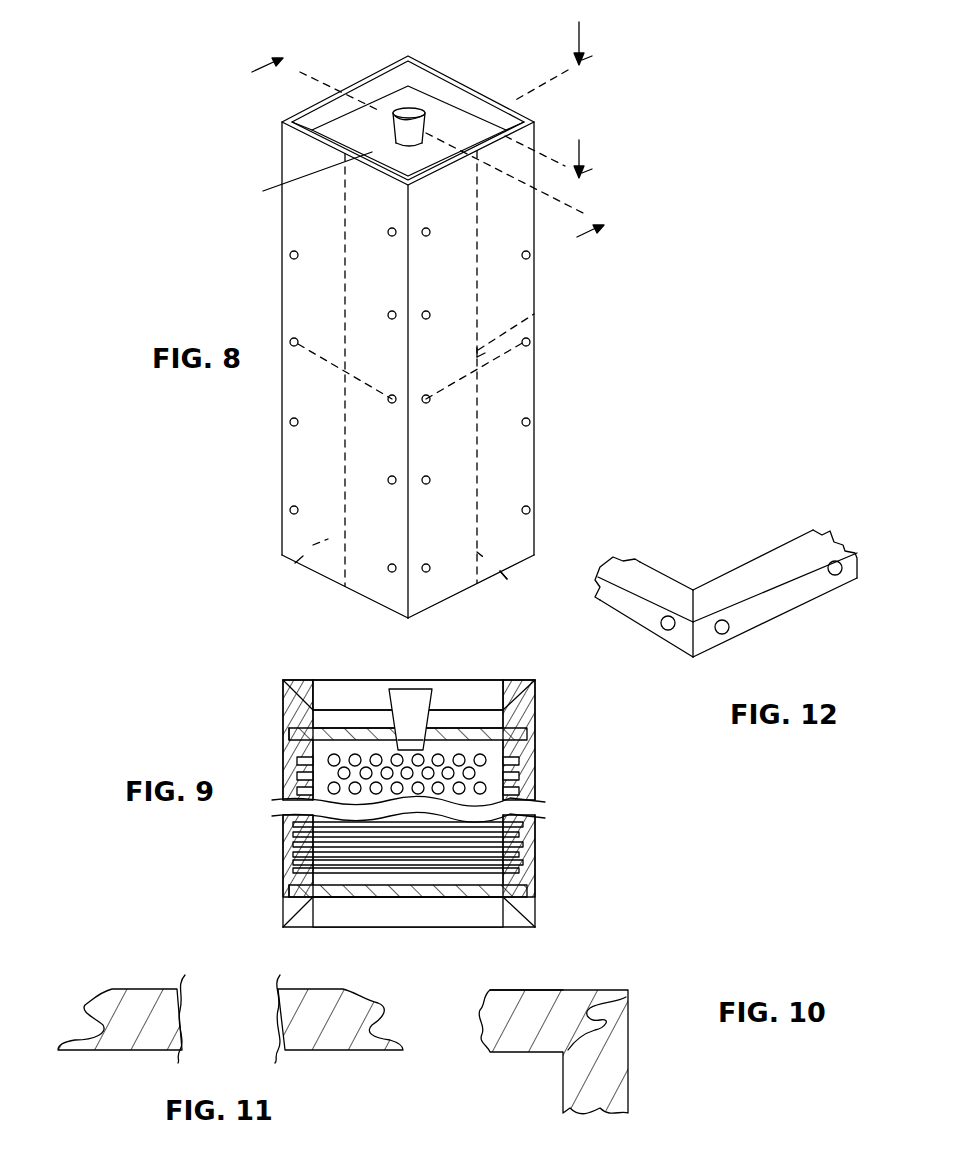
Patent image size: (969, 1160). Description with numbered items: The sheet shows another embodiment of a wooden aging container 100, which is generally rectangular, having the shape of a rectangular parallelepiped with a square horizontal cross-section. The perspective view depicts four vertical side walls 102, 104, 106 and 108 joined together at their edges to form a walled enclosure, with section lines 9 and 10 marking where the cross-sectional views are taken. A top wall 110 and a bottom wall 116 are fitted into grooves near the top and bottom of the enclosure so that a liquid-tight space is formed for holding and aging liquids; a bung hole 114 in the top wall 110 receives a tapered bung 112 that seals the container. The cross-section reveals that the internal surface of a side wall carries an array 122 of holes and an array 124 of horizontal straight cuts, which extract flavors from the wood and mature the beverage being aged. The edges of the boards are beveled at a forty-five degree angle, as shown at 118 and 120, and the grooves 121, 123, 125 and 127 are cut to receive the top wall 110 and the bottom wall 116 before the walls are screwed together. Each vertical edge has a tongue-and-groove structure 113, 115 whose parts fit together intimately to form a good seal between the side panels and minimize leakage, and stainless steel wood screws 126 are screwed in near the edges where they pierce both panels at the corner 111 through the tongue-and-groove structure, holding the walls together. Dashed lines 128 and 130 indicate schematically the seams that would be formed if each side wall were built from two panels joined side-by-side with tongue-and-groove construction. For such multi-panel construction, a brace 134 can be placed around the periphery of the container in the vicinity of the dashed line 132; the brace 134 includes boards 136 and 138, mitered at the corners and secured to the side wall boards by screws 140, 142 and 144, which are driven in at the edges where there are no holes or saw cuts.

In FIG. 8, the section line 9- 9 is at (418, 155).
In FIG. 8, the section line 10- 10 is at (559, 91).
In FIG. 8, the container 100 is at (610, 109).
In FIG. 8, the side wall 102 is at (508, 388).
In FIG. 9, the side wall 102 is at (535, 750).
In FIG. 8, the side wall 104 is at (297, 387).
In FIG. 8, the side wall 106 is at (487, 97).
In FIG. 9, the side wall 106 is at (500, 680).
In FIG. 10, the side wall 106 is at (631, 1071).
In FIG. 8, the side wall 108 is at (358, 82).
In FIG. 9, the side wall 108 is at (283, 715).
In FIG. 10, the side wall 108 is at (527, 988).
In FIG. 8, the top wall 110 is at (437, 112).
In FIG. 9, the top wall 110 is at (485, 727).
In FIG. 10, the corner 111 is at (585, 1025).
In FIG. 8, the tapered bung 112 is at (407, 108).
In FIG. 9, the tapered bung 112 is at (414, 690).
In FIG. 11, the tongue-and-groove structure 113 is at (348, 1033).
In FIG. 8, the bung hole 114 is at (300, 177).
In FIG. 9, the bung hole 114 is at (392, 728).
In FIG. 11, the tongue-and-groove structure 115 is at (120, 1005).
In FIG. 9, the bottom wall 116 is at (330, 897).
In FIG. 9, the beveled edge 118 is at (313, 690).
In FIG. 9, the beveled edge 120 is at (492, 917).
In FIG. 9, the groove 121 is at (528, 892).
In FIG. 9, the array of holes 122 is at (490, 777).
In FIG. 9, the groove 123 is at (527, 733).
In FIG. 9, the array of horizontal straight cuts 124 is at (530, 840).
In FIG. 9, the groove 125 is at (289, 735).
In FIG. 8, the wood screws 126 is at (291, 340).
In FIG. 9, the groove 127 is at (291, 892).
In FIG. 8, the dashed line 128 is at (280, 573).
In FIG. 8, the dashed line 130 is at (526, 589).
In FIG. 8, the dashed line 132 is at (549, 316).
In FIG. 12, the brace 134 is at (744, 582).
In FIG. 12, the board 136 is at (776, 605).
In FIG. 12, the board 138 is at (624, 617).
In FIG. 12, the screw 140 is at (842, 574).
In FIG. 12, the screw 142 is at (728, 634).
In FIG. 12, the screw 144 is at (668, 616).